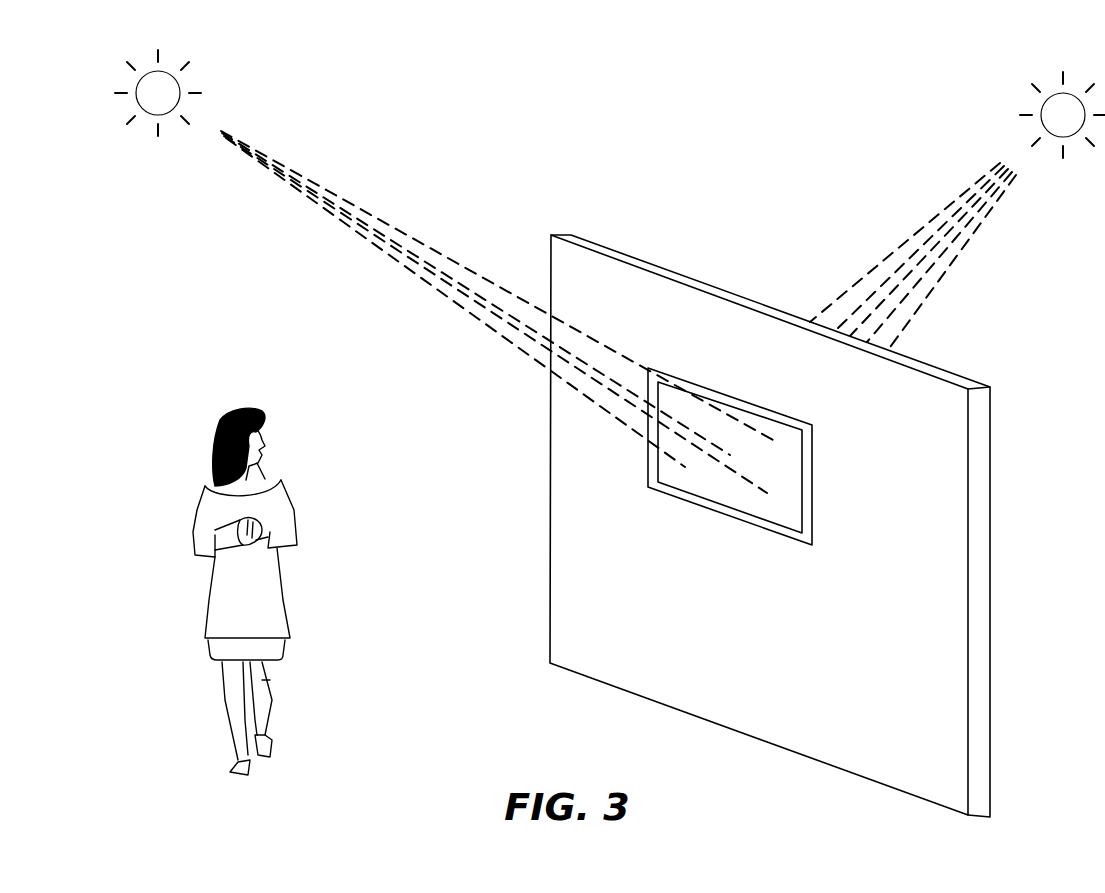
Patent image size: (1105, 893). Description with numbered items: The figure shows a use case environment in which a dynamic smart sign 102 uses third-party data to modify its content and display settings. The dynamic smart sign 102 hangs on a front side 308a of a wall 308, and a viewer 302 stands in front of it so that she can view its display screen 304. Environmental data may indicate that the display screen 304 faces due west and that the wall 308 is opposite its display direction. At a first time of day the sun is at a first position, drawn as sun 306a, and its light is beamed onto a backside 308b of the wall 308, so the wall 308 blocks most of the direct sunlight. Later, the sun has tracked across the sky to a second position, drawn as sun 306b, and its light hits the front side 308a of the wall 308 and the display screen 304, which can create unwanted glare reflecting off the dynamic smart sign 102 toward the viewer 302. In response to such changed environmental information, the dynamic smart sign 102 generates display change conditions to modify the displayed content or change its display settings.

The dynamic smart sign 102 is at (763, 413).
The viewer 302 is at (203, 505).
The display screen 304 is at (723, 487).
The sun 306a is at (957, 197).
The sun 306b is at (444, 263).
The wall 308 is at (809, 526).
The front side 308a is at (940, 474).
The backside 308b is at (990, 404).